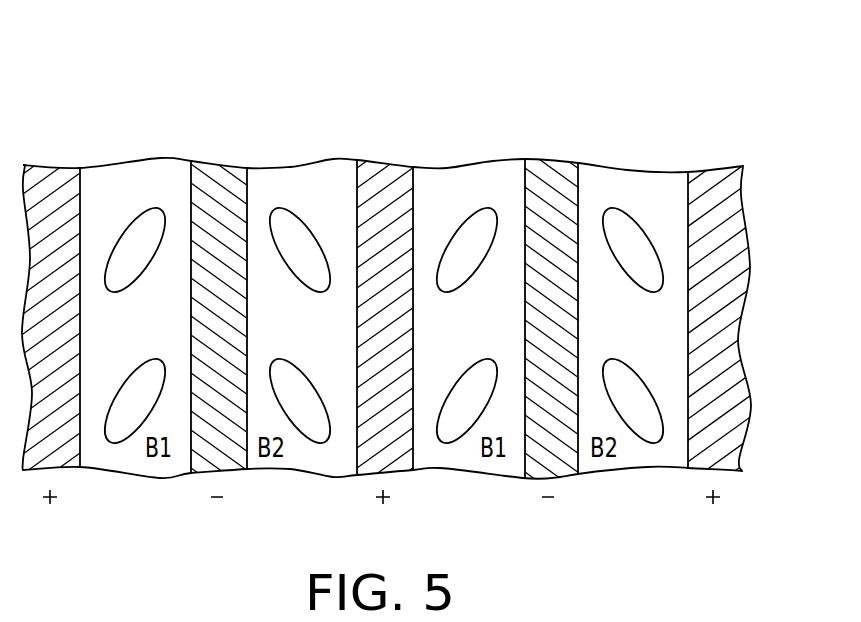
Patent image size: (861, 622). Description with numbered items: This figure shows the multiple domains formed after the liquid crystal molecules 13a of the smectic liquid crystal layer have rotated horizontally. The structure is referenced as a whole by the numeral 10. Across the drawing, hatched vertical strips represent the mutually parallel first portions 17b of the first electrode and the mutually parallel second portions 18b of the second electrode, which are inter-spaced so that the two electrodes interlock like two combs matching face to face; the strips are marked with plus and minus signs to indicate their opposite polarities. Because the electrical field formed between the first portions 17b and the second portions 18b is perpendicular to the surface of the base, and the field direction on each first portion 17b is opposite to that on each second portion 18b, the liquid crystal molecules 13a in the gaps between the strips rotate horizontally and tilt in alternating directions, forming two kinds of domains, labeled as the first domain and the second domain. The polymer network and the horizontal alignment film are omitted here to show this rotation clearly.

The battery structure 10 is at (801, 45).
The liquid crystal molecule 13a is at (144, 221).
The first portion 17b is at (222, 180).
The second portion 18b is at (43, 180).